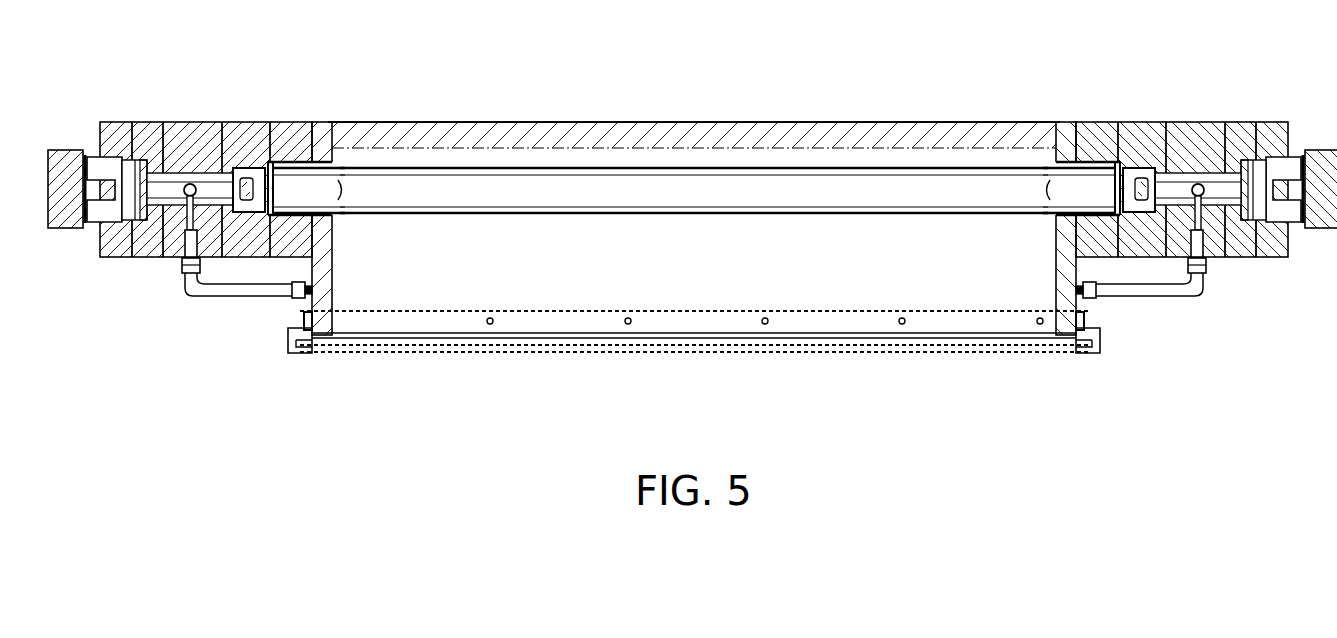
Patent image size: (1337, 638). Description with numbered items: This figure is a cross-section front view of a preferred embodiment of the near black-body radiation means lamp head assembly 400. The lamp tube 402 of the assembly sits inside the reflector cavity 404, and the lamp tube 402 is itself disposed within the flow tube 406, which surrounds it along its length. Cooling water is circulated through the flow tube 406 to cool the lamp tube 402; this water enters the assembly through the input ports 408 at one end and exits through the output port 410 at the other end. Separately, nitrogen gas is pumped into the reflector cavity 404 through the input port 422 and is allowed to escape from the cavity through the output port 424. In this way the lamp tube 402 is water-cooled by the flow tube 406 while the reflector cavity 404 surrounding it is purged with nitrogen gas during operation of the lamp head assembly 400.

The lamp head assembly 400 is at (679, 205).
The lamp tube 402 is at (945, 170).
The reflector cavity 404 is at (694, 289).
The flow tube 406 is at (583, 168).
The input ports 408 is at (252, 122).
The output port 410 is at (1140, 175).
The input port 422 is at (186, 198).
The output port 424 is at (335, 289).